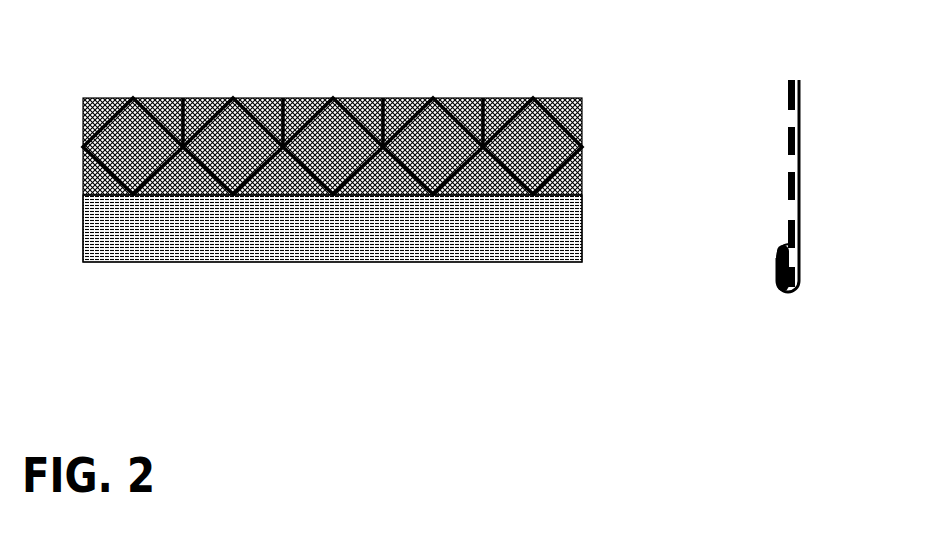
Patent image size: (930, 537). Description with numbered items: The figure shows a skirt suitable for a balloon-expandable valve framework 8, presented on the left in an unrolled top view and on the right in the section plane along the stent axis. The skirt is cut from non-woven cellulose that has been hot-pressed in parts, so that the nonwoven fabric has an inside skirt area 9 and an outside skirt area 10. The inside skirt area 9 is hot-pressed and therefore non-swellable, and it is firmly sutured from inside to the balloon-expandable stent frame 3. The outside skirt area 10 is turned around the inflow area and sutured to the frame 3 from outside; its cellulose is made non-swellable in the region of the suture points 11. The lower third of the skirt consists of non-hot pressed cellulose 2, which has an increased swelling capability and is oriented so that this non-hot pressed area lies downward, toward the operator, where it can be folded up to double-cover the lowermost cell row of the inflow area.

The non-hot pressed cellulose 2 is at (772, 283).
The balloon-expandable stent frame 3 is at (555, 122).
The balloon-expandable valve framework 8 is at (490, 88).
The inside skirt area 9 is at (558, 147).
The outside skirt area 10 is at (560, 211).
The suture points 11 is at (782, 240).